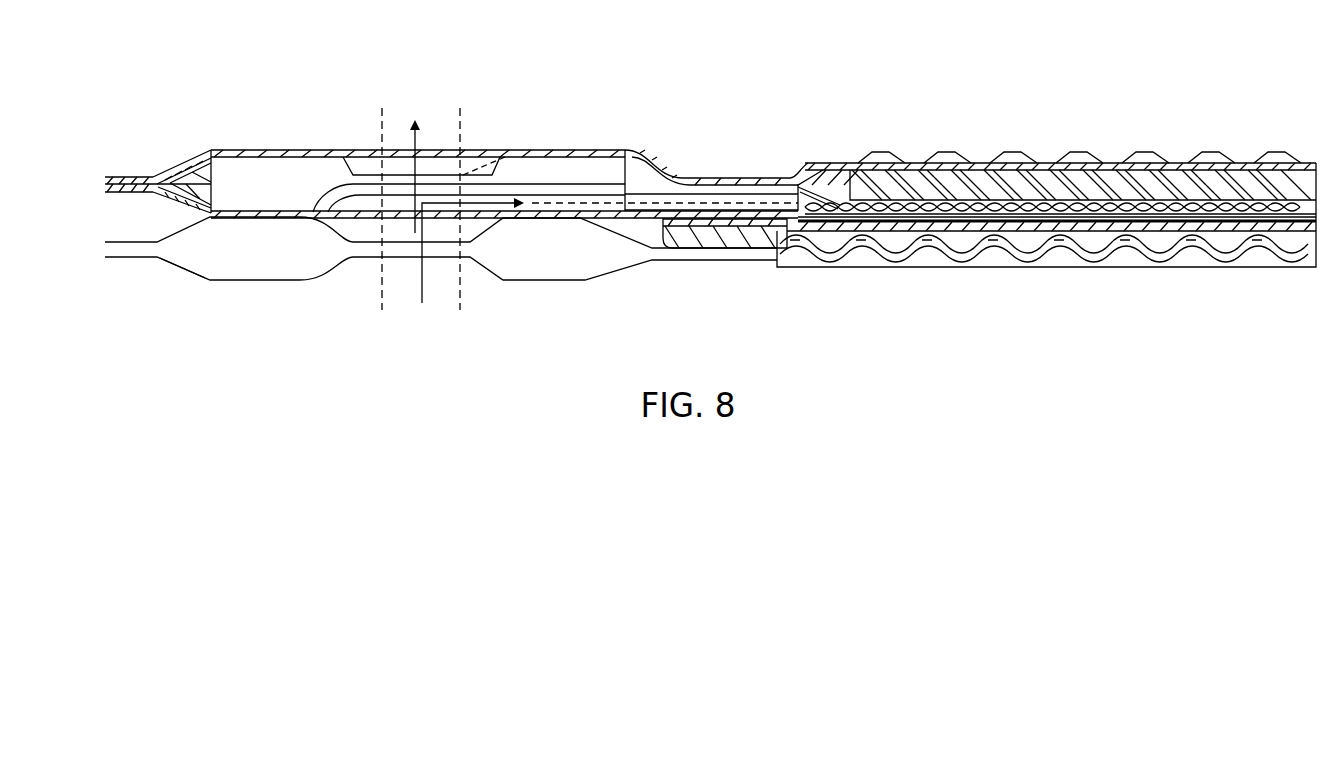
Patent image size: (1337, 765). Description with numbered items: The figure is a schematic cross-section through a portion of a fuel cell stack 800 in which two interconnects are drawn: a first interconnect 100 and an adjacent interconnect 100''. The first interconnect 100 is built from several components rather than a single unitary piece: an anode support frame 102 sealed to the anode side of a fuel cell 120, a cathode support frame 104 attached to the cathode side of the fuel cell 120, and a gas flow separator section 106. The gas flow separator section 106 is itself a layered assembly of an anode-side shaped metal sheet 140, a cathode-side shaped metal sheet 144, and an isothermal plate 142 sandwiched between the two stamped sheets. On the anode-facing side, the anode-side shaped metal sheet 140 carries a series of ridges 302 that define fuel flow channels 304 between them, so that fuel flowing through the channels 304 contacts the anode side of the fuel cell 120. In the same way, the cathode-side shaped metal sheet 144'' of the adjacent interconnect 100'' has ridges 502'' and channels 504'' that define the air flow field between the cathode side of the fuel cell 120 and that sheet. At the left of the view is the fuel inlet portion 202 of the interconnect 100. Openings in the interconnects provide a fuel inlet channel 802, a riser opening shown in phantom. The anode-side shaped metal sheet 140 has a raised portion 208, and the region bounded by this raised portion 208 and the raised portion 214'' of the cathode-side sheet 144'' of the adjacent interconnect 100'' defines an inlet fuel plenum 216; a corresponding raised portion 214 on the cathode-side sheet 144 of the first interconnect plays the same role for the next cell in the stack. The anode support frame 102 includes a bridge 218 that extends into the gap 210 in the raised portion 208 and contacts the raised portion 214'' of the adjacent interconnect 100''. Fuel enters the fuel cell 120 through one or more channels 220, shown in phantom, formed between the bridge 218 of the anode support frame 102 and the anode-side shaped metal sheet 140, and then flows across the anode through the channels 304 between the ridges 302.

The fuel cell stack 800 is at (163, 110).
The interconnect 100 is at (129, 181).
The adjacent interconnect 100'' is at (412, 248).
The raised portion 214 is at (413, 128).
The raised portion 214'' is at (504, 241).
The raised portion 208 is at (278, 212).
The fuel inlet portion 202 is at (565, 87).
The inlet fuel plenum 216 is at (378, 203).
The gap 210 is at (540, 183).
The fuel inlet channel 802 is at (430, 120).
The anode support frame 102 is at (738, 208).
The channels 220 is at (580, 222).
The bridge 218 is at (598, 215).
The cathode support frame 104 is at (713, 237).
The gas flow separator section 106 is at (1123, 100).
The cathode-side shaped metal sheet 144 is at (1060, 135).
The isothermal plate 142 is at (1020, 180).
The ridges 302 is at (1068, 212).
The fuel flow channels 304 is at (1097, 212).
The anode-side shaped metal sheet 140 is at (1177, 207).
The fuel cell 120 is at (1080, 232).
The cathode-side shaped metal sheet 144'' is at (1044, 278).
The ridges 502'' is at (1044, 272).
The channels 504'' is at (1026, 276).